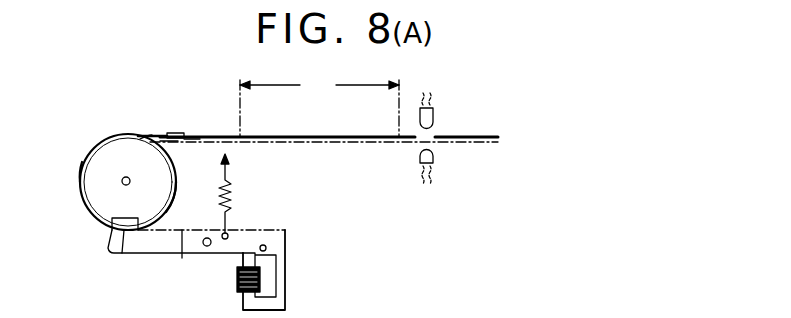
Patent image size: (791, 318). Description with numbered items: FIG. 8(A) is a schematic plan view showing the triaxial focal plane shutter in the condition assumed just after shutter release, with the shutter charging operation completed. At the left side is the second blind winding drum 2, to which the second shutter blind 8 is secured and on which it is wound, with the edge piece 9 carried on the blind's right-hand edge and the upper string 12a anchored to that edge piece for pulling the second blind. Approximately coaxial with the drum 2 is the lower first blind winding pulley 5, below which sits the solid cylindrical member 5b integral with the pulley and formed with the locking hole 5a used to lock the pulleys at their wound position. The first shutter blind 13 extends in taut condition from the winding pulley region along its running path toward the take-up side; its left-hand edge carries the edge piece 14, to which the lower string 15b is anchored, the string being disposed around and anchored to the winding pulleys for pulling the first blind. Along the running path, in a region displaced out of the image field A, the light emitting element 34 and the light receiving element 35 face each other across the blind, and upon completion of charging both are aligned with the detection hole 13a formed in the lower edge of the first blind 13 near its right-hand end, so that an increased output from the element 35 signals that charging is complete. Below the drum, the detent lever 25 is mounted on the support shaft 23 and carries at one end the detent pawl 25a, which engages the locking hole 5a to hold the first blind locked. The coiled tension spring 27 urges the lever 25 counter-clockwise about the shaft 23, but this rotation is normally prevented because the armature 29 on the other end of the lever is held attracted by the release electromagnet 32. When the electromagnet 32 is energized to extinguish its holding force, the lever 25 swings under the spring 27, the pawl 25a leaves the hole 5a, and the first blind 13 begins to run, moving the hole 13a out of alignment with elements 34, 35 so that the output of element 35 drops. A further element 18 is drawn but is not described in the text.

The second blind winding drum 2 is at (177, 178).
The first blind winding pulley 5 is at (100, 148).
The locking hole 5a is at (123, 218).
The solid cylindrical member 5b is at (80, 177).
The second shutter blind 8 is at (153, 134).
The edge piece 9 is at (176, 142).
The upper string 12a is at (341, 143).
The first shutter blind 13 is at (270, 136).
The detection hole 13a is at (437, 133).
The edge piece 14 is at (183, 132).
The lower string 15b is at (161, 134).
The pivot pin 18 is at (126, 177).
The support shaft 23 is at (205, 238).
The detent lever 25 is at (182, 254).
The detent pawl 25a is at (124, 232).
The coiled tension spring 27 is at (228, 190).
The armature 29 is at (285, 243).
The release electromagnet 32 is at (285, 280).
The light emitting element 34 is at (433, 118).
The light receiving element 35 is at (433, 156).
The image field A is at (319, 105).